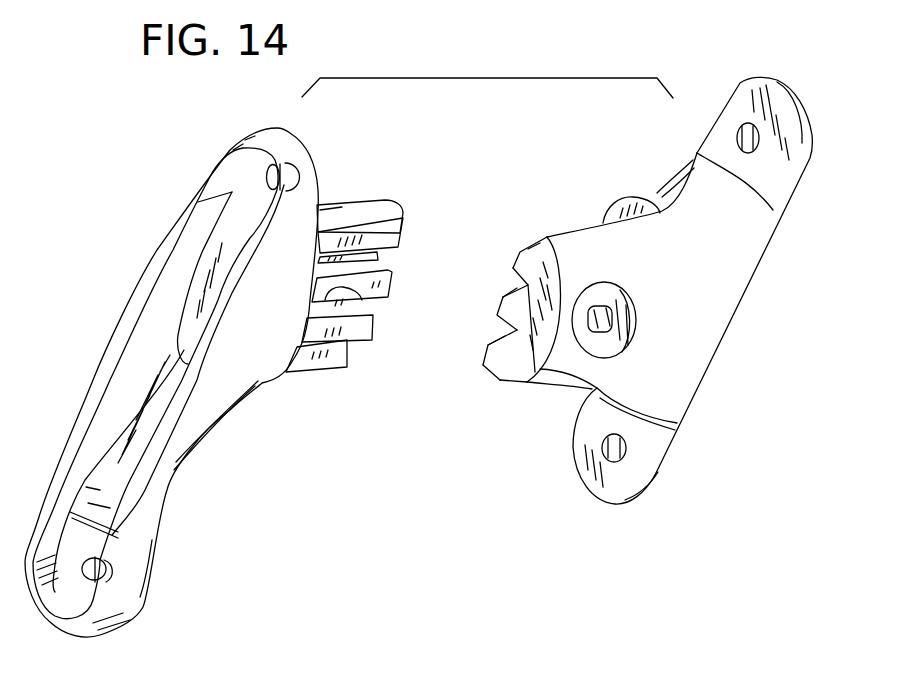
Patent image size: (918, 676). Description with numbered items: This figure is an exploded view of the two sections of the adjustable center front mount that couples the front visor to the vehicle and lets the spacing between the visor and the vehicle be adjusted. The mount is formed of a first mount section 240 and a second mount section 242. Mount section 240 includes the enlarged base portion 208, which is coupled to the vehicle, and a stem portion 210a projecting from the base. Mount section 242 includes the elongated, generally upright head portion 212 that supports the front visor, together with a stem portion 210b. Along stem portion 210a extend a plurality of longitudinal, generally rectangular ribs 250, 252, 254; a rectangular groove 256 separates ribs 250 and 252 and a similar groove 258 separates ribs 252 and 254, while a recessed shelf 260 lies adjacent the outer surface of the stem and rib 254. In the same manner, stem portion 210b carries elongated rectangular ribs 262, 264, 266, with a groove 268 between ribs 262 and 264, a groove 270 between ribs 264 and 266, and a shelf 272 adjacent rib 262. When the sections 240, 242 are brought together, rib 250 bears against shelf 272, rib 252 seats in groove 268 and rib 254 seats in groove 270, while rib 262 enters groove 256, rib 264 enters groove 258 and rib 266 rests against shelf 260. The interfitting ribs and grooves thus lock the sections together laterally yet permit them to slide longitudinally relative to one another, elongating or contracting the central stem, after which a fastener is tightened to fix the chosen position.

The base portion 208 is at (773, 167).
The stem portion 210a is at (573, 237).
The stem portion 210b is at (358, 207).
The head portion 212 is at (148, 518).
The first mount section 240 is at (692, 365).
The second mount section 242 is at (262, 382).
The rib 250 is at (485, 352).
The rib 252 is at (498, 302).
The rib 254 is at (517, 264).
The groove 256 is at (486, 372).
The groove 258 is at (533, 367).
The recessed shelf 260 is at (520, 243).
The rib 262 is at (373, 350).
The rib 264 is at (390, 298).
The rib 266 is at (393, 232).
The groove 268 is at (363, 303).
The groove 270 is at (372, 260).
The shelf 272 is at (347, 345).